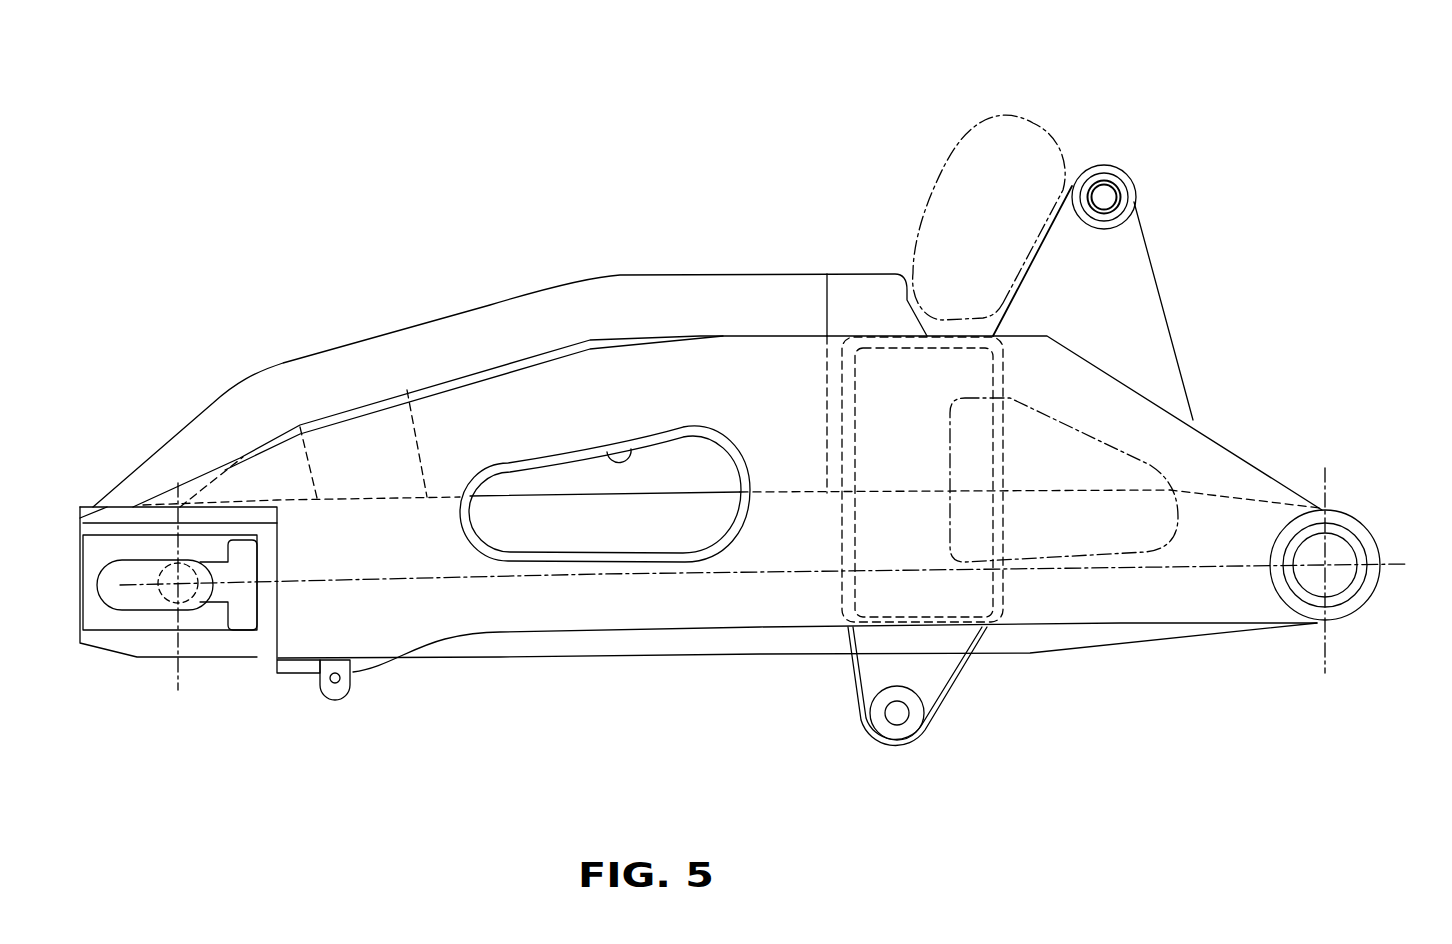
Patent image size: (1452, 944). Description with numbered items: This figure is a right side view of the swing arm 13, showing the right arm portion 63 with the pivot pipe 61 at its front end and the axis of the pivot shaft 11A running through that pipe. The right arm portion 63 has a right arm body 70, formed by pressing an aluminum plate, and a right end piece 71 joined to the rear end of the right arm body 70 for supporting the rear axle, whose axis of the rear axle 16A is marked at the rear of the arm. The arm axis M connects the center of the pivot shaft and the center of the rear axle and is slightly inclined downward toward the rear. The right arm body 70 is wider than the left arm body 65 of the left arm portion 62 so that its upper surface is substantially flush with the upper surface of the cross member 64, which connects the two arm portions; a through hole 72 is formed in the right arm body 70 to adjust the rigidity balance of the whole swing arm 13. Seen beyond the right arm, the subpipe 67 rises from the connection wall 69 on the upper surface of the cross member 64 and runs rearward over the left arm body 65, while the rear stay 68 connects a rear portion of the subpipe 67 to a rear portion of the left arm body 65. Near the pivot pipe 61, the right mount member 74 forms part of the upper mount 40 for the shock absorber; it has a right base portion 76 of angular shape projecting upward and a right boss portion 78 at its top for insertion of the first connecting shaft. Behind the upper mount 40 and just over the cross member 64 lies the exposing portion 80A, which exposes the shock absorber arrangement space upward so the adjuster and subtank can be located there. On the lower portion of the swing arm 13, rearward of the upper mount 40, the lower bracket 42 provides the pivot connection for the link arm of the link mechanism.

The swing arm 13 is at (777, 138).
The subpipe 67 is at (457, 316).
The rear stay 68 is at (413, 423).
The connection wall 69 is at (883, 272).
The exposing portion 80A is at (973, 128).
The right boss portion 78 is at (1107, 164).
The right mount member 74 is at (1151, 294).
The upper mount 40 is at (1151, 294).
The right base portion 76 is at (1158, 273).
The pivot pipe 61 is at (1350, 564).
The axis of the pivot shaft 11A is at (1325, 567).
The through hole 72 is at (618, 455).
The cross member 64 is at (840, 413).
The lower bracket 42 is at (857, 700).
The right end piece 71 is at (123, 660).
The axis of the rear axle 16A is at (190, 600).
The left arm body 65 is at (460, 716).
The left arm portion 62 is at (473, 660).
The arm axis M is at (597, 577).
The right arm portion 63 is at (650, 659).
The right arm body 70 is at (710, 633).